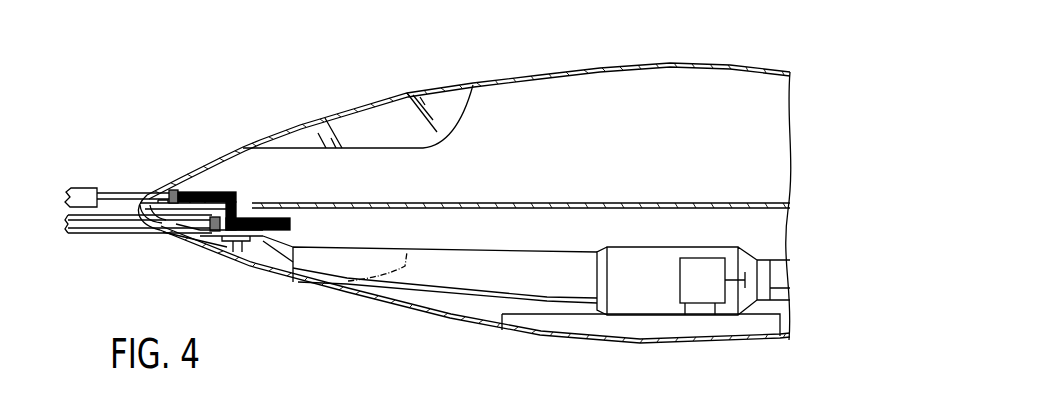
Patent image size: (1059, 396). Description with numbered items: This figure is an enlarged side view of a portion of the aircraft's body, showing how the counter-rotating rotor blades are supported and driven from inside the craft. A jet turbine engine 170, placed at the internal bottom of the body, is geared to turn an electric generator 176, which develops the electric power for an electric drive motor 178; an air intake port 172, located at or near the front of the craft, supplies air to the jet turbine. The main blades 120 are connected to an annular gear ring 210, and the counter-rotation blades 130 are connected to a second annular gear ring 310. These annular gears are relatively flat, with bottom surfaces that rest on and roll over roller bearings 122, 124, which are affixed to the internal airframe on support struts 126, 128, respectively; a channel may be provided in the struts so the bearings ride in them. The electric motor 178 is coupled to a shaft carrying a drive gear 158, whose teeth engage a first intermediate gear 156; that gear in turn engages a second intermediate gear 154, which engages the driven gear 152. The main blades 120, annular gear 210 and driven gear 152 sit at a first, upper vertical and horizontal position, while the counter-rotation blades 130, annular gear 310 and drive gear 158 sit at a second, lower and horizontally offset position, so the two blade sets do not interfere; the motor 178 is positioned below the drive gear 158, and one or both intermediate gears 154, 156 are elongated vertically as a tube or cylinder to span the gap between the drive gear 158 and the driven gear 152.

The main blades 120 is at (81, 188).
The roller bearing 122 is at (176, 224).
The roller bearing 124 is at (222, 233).
The support strut 126 is at (158, 206).
The support strut 128 is at (238, 253).
The counter-rotation blades 130 is at (82, 235).
The driven gear 152 is at (201, 192).
The second intermediate gear 154 is at (258, 195).
The first intermediate gear 156 is at (238, 201).
The drive gear 158 is at (291, 203).
The jet turbine engine 170 is at (621, 252).
The air intake port 172 is at (412, 264).
The electric generator 176 is at (690, 258).
The electric drive motor 178 is at (278, 257).
The annular gear ring 210 is at (172, 190).
The annular gear ring 310 is at (213, 232).